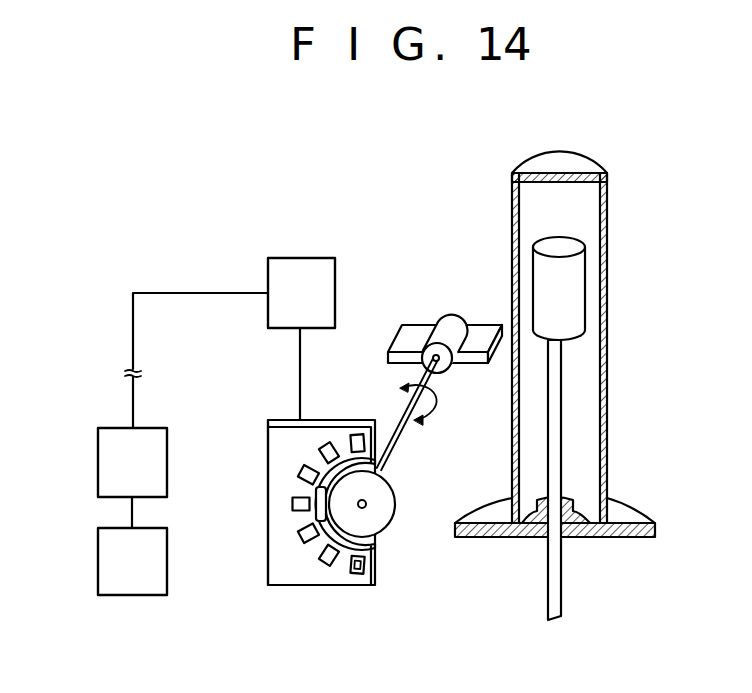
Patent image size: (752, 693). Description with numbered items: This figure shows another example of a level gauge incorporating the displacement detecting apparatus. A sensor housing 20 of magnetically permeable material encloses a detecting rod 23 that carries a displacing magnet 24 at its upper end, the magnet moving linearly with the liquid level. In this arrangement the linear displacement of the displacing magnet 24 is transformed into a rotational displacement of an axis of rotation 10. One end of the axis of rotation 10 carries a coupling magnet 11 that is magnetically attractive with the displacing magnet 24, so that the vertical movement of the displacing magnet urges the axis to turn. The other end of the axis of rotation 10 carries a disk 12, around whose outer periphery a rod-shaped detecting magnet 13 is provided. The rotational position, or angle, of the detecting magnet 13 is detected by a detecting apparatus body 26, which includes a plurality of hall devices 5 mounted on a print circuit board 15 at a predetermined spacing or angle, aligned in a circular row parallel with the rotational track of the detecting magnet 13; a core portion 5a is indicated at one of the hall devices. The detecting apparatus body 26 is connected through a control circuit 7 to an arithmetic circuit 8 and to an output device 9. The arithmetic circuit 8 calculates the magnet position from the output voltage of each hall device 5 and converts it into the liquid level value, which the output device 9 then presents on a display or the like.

The hall device 5 is at (336, 440).
The coil core 5a is at (346, 566).
The control circuit 7 is at (288, 258).
The arithmetic circuit 8 is at (98, 465).
The output device 9 is at (98, 563).
The axis of rotation 10 is at (399, 434).
The coupling magnet 11 is at (426, 332).
The disk 12 is at (381, 521).
The detecting magnet 13 is at (316, 491).
The print circuit board 15 is at (267, 537).
The sensor housing 20 is at (607, 213).
The detecting rod 23 is at (560, 421).
The displacing magnet 24 is at (578, 295).
The detecting apparatus body 26 is at (267, 567).